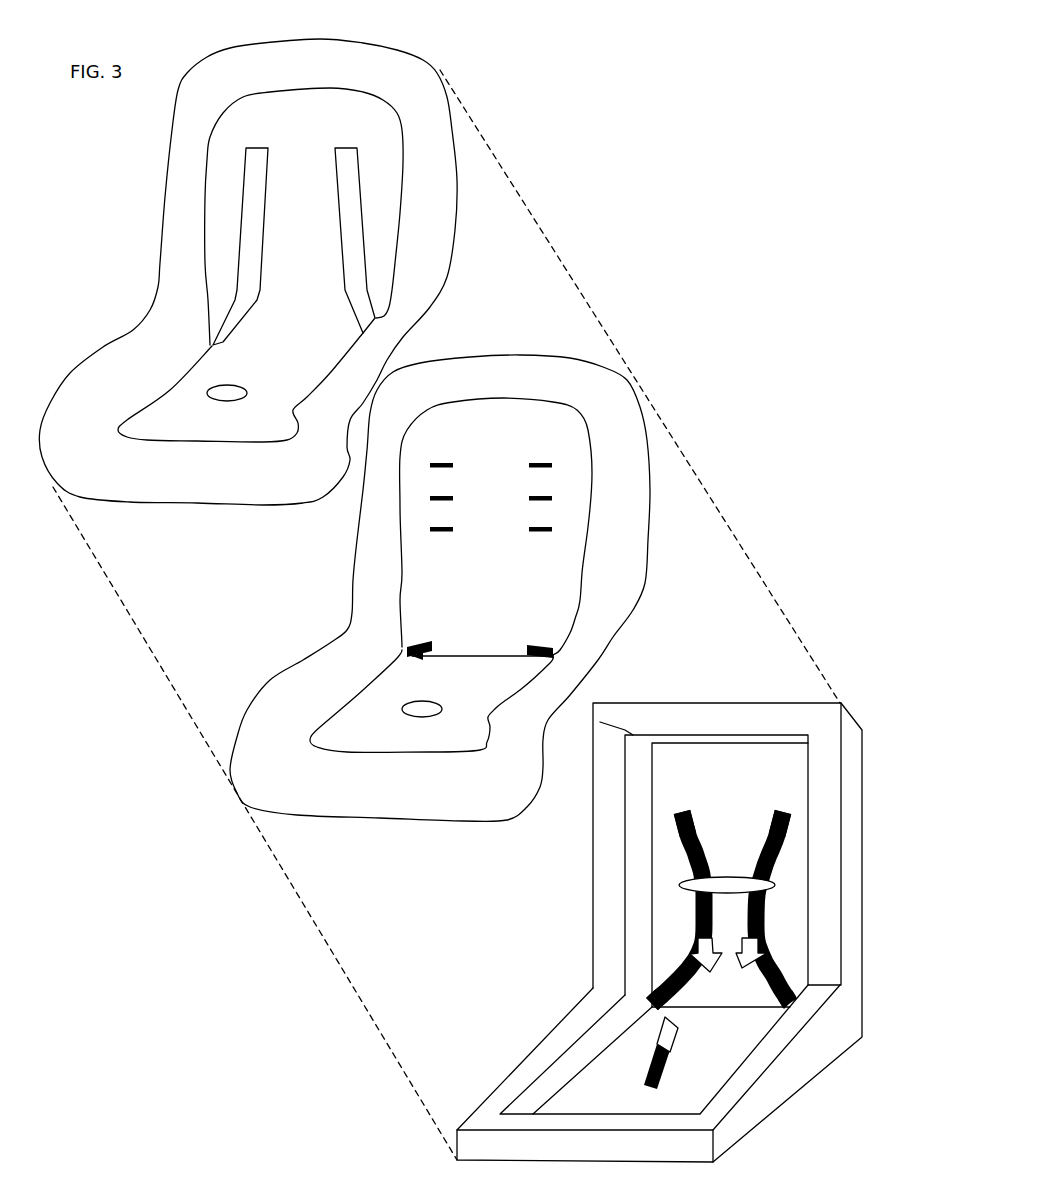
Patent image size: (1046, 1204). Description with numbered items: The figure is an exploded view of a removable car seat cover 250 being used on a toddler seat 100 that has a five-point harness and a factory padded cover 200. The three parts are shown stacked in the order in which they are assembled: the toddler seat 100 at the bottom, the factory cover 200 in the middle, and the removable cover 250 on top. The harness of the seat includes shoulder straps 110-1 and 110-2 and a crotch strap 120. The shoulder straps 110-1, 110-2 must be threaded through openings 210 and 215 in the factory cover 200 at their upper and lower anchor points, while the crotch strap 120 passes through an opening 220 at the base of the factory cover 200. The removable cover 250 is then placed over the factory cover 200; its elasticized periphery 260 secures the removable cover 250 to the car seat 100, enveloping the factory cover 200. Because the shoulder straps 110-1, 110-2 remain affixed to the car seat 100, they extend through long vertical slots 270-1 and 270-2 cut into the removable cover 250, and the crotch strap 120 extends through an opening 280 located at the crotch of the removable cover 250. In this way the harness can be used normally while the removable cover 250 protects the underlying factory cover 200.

The toddler seat 100 is at (722, 763).
The shoulder strap 110-1 is at (688, 845).
The shoulder strap 110-2 is at (744, 908).
The crotch strap 120 is at (643, 1065).
The factory padded cover 200 is at (270, 782).
The openings 210 is at (428, 466).
The openings 215 is at (524, 644).
The opening 220 is at (417, 705).
The removable car seat cover 250 is at (300, 117).
The elasticized periphery 260 is at (172, 165).
The long vertical slot 270-1 is at (247, 227).
The long vertical slot 270-2 is at (358, 212).
The opening 280 is at (219, 388).